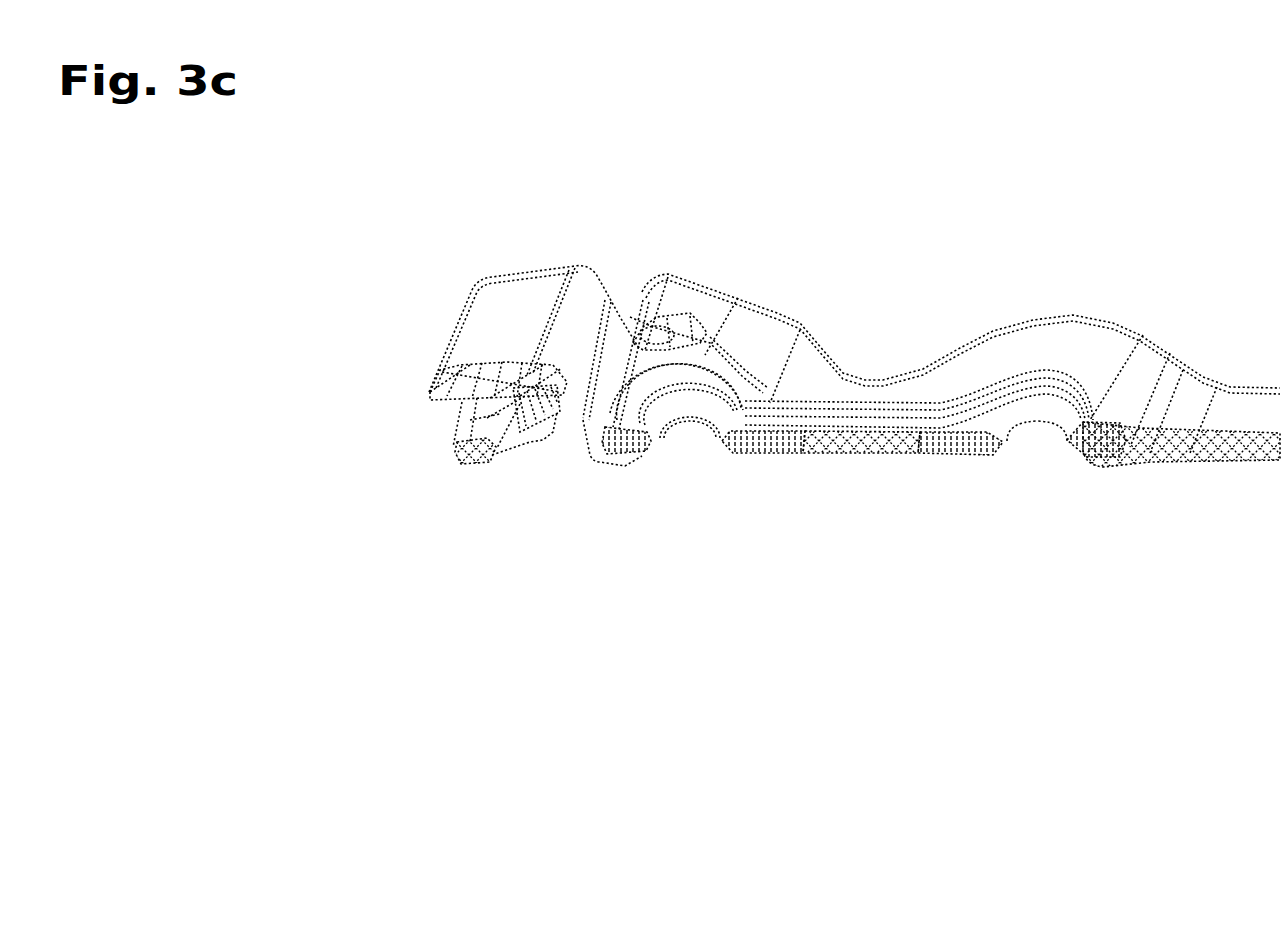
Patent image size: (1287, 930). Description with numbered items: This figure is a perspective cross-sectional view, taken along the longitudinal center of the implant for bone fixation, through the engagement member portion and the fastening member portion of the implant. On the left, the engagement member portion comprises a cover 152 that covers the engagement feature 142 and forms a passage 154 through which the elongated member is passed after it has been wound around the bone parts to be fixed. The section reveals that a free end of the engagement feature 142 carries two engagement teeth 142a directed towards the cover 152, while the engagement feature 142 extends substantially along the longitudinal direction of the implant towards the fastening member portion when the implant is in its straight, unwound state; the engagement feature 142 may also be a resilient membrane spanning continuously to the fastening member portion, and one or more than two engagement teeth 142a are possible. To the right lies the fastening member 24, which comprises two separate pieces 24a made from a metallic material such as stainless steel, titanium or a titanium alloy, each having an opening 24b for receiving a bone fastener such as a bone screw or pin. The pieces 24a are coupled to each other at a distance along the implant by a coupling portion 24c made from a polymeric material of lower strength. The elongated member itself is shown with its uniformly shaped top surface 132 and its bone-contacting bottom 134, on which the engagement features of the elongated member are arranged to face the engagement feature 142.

The passage 154 is at (428, 418).
The cover 152 is at (450, 390).
The engagement feature 142 is at (535, 433).
The engagement teeth 142a is at (520, 412).
The fastening member 24 is at (1133, 592).
The pieces 24a is at (630, 440).
The opening 24b is at (691, 440).
The coupling portion 24c is at (836, 443).
The top surface 132 is at (1245, 410).
The bone-contacting bottom 134 is at (1247, 453).